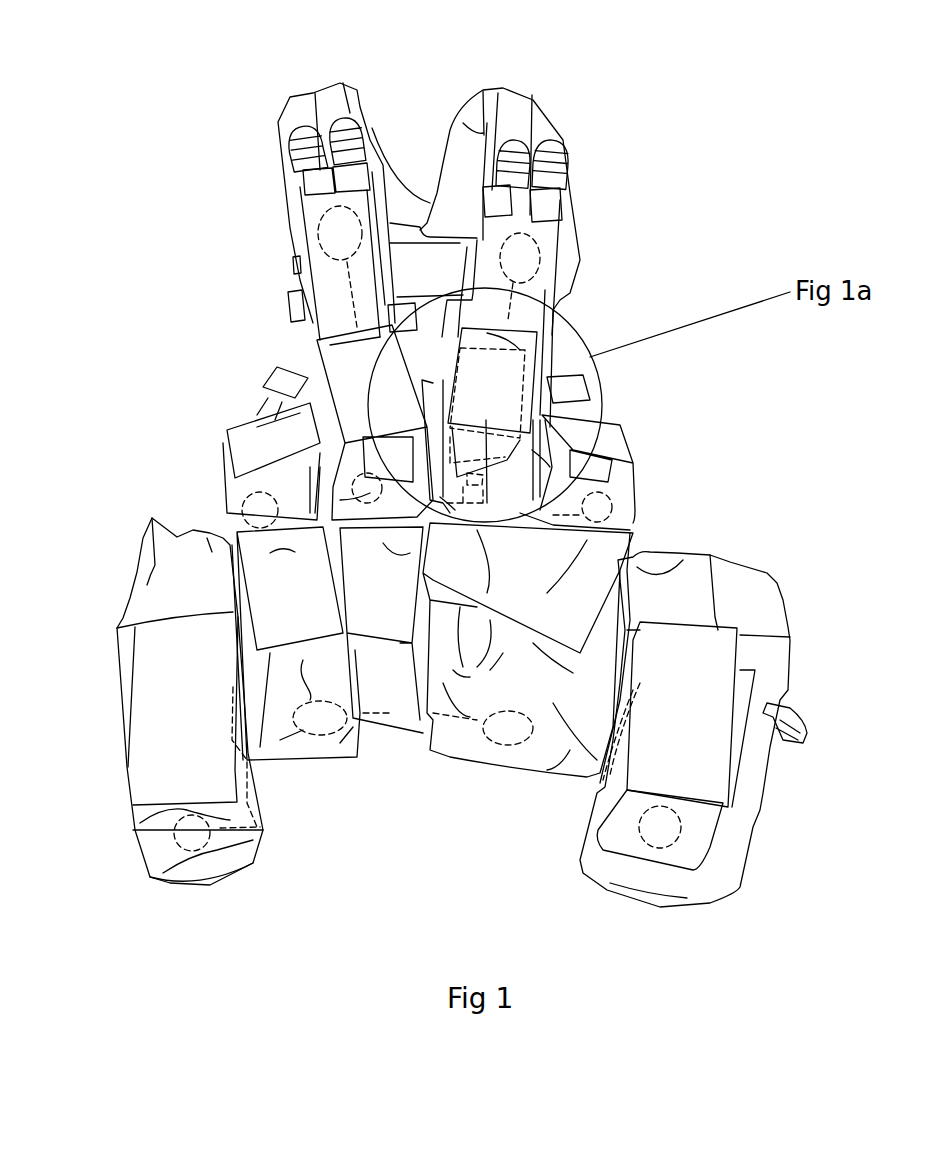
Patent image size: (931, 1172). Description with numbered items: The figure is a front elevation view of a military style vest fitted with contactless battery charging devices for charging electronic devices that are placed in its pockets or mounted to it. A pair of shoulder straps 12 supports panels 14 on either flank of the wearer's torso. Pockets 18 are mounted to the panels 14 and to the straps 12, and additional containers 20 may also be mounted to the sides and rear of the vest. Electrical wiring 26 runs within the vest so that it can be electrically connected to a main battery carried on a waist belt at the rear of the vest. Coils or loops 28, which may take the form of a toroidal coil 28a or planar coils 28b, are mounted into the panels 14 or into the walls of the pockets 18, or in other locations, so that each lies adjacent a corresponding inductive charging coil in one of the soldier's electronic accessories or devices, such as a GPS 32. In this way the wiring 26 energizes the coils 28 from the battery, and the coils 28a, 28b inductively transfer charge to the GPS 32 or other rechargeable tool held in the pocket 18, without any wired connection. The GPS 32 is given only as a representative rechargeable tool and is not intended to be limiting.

The shoulder straps 12 is at (292, 112).
The panels 14 is at (237, 345).
The pockets 18 is at (620, 540).
The additional containers 20 is at (770, 578).
The electrical wiring 26 is at (350, 300).
The coils or loops 28 is at (357, 473).
The toroidal coil 28a is at (487, 492).
The planar coils 28b is at (322, 240).
The GPS 32 is at (530, 357).